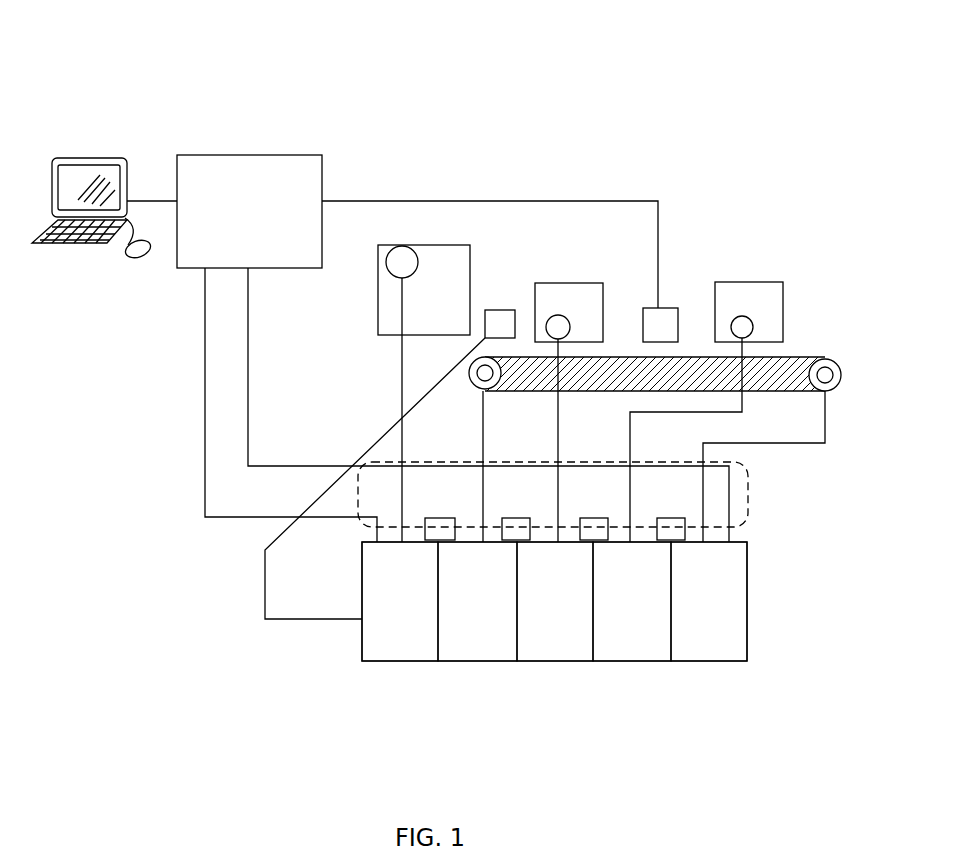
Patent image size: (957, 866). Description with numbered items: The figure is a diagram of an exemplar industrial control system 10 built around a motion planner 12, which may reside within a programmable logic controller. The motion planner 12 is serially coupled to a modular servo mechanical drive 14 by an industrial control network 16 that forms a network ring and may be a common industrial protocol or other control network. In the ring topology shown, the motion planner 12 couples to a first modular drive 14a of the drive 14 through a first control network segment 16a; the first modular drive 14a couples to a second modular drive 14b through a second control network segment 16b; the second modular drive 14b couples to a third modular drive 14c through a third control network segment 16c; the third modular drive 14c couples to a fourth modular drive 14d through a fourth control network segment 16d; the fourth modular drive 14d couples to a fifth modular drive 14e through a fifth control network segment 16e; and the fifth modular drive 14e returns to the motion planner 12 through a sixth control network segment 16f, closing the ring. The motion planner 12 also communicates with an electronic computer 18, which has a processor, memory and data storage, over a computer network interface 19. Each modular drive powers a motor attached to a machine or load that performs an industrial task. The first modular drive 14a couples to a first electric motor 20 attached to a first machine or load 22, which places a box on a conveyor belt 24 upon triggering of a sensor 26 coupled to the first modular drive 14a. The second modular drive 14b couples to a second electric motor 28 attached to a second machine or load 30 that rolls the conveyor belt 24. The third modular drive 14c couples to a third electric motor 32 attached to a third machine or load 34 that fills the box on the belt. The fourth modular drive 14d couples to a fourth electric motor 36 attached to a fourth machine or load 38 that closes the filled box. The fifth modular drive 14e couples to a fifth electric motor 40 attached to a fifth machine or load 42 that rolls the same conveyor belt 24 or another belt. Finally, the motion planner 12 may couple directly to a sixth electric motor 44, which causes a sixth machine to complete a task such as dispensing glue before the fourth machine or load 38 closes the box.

The industrial control system 10 is at (697, 114).
The motion planner 12 is at (223, 214).
The modular servo mechanical drive 14 is at (677, 661).
The first modular drive 14a is at (386, 602).
The second modular drive 14b is at (461, 602).
The third modular drive 14c is at (541, 602).
The fourth modular drive 14d is at (616, 602).
The fifth modular drive 14e is at (693, 602).
The industrial control network 16 is at (749, 490).
The first control network segment 16a is at (205, 465).
The second control network segment 16b is at (440, 518).
The third control network segment 16c is at (516, 518).
The fourth control network segment 16d is at (594, 518).
The fifth control network segment 16e is at (671, 518).
The sixth control network segment 16f is at (248, 437).
The electronic computer 18 is at (78, 158).
The computer network interface 19 is at (140, 201).
The first electric motor 20 is at (411, 250).
The first machine or load 22 is at (430, 302).
The conveyor belt 24 is at (790, 357).
The sensor 26 is at (500, 310).
The second electric motor 28 is at (469, 375).
The second machine or load 30 is at (487, 392).
The third electric motor 32 is at (560, 315).
The third machine or load 34 is at (575, 316).
The fourth electric motor 36 is at (745, 316).
The fourth machine or load 38 is at (752, 307).
The fifth electric motor 40 is at (831, 389).
The fifth machine or load 42 is at (834, 361).
The sixth electric motor 44 is at (650, 335).